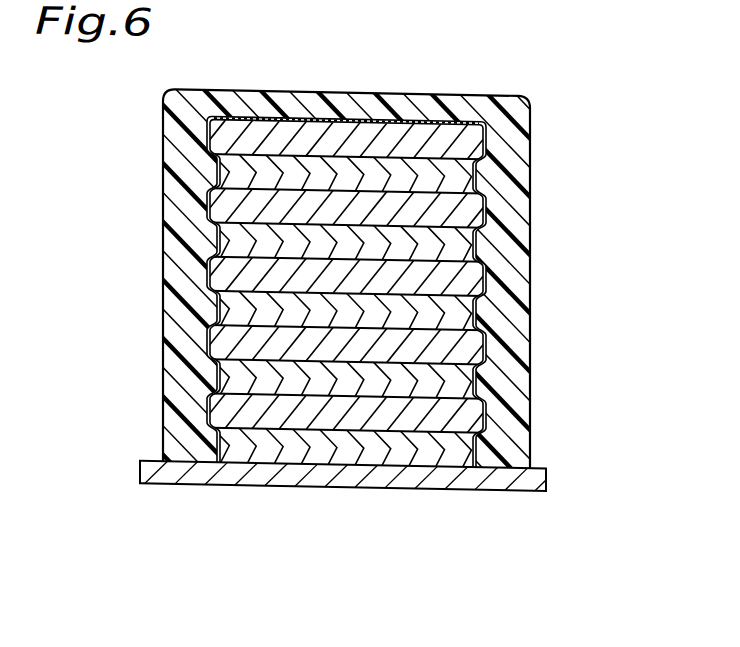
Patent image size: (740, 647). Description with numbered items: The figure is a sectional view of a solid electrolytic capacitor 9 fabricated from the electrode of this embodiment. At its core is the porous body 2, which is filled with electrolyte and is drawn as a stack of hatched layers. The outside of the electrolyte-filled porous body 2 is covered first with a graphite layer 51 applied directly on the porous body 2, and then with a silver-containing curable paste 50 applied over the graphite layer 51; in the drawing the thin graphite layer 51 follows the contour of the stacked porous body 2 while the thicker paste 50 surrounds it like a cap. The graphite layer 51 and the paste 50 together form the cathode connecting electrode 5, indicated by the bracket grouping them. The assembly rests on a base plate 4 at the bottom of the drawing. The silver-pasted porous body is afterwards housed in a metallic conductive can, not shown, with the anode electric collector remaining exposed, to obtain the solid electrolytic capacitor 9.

The porous body 2 is at (320, 401).
The base plate 4 is at (510, 468).
The cathode connecting electrode 5 is at (397, 323).
The silver-containing curable paste 50 is at (522, 318).
The graphite layer 51 is at (488, 218).
The solid electrolytic capacitor 9 is at (397, 323).